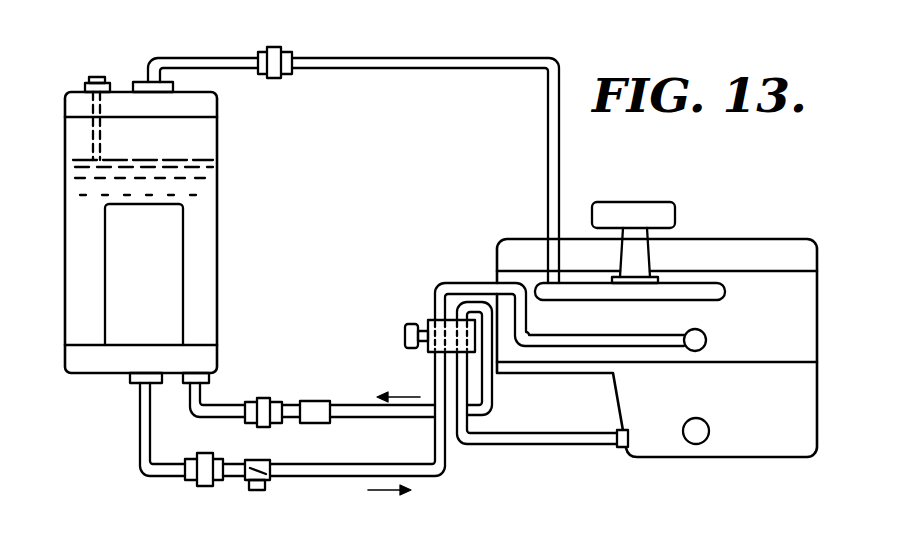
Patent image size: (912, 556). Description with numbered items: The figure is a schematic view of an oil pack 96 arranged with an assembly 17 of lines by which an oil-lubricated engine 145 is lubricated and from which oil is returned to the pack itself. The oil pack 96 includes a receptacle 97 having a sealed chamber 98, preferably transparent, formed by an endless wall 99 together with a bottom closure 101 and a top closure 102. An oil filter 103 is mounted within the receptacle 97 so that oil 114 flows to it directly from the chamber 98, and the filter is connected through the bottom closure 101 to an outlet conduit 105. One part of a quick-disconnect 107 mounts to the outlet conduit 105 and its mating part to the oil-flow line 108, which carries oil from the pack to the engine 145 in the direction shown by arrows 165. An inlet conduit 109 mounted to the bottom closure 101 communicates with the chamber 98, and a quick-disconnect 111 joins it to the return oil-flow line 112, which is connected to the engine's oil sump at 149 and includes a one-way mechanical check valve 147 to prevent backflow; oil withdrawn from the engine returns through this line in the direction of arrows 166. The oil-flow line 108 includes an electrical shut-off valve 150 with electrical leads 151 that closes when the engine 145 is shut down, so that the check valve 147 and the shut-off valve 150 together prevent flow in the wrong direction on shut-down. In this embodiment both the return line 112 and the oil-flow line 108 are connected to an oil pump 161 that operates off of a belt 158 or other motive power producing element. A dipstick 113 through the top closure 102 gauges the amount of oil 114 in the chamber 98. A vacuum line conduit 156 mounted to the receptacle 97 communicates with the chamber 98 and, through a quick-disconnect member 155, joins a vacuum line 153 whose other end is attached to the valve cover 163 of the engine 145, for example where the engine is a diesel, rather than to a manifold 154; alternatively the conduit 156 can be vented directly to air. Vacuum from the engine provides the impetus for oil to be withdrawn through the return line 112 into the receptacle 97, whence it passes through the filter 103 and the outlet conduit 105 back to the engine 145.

The assembly of lines 17 is at (458, 188).
The oil pack 96 is at (218, 205).
The receptacle 97 is at (218, 280).
The sealed chamber 98 is at (200, 147).
The endless wall 99 is at (65, 323).
The bottom closure 101 is at (70, 373).
The top closure 102 is at (213, 105).
The oil filter 103 is at (185, 314).
The outlet conduit 105 is at (140, 418).
The quick-disconnect 107 is at (200, 487).
The oil-flow line 108 is at (310, 477).
The inlet conduit 109 is at (227, 403).
The quick-disconnect 111 is at (253, 425).
The return oil-flow line 112 is at (492, 403).
The dipstick 113 is at (101, 77).
The oil 114 is at (203, 236).
The engine 145 is at (838, 222).
The one-way mechanical check valve 147 is at (322, 402).
The engine oil sump 149 is at (618, 438).
The electrical shut-off valve 150 is at (280, 483).
The electrical leads 151 is at (246, 490).
The vacuum line 153 is at (405, 72).
The manifold 154 is at (720, 300).
The quick-disconnect member 155 is at (283, 50).
The vacuum line conduit 156 is at (222, 40).
The belt 158 is at (405, 333).
The oil pump 161 is at (440, 318).
The valve cover 163 is at (740, 239).
The arrows 165 is at (411, 514).
The arrows 166 is at (401, 374).